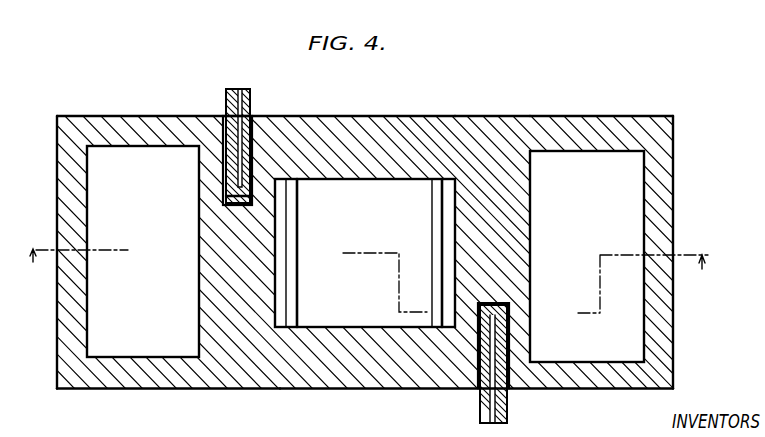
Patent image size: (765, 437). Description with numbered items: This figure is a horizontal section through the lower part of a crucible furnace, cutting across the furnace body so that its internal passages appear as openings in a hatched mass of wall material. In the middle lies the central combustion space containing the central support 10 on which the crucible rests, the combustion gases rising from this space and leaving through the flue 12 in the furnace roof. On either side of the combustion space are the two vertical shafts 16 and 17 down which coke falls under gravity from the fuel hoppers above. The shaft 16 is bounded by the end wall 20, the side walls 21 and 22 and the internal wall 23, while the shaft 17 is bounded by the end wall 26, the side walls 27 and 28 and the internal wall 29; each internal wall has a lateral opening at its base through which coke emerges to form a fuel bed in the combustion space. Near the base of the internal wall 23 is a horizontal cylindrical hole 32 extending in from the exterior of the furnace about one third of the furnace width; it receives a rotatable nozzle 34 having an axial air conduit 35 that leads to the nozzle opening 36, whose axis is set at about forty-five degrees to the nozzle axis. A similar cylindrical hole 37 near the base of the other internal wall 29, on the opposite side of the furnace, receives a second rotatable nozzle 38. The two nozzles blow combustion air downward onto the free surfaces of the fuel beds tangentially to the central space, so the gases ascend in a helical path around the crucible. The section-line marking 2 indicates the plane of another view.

The section line 2- 2 is at (72, 255).
The central support 10 is at (368, 202).
The flue 12 is at (648, 282).
The vertical shaft 16 is at (112, 232).
The vertical shaft 17 is at (598, 233).
The end wall 20 is at (72, 274).
The side wall 21 is at (112, 127).
The side wall 22 is at (134, 372).
The internal wall 23 is at (238, 300).
The end wall 26 is at (652, 281).
The side wall 27 is at (607, 128).
The side wall 28 is at (617, 372).
The internal wall 29 is at (483, 185).
The horizontal cylindrical hole 32 is at (225, 172).
The rotatable nozzle 34 is at (250, 100).
The axial air conduit 35 is at (240, 88).
The nozzle opening 36 is at (225, 205).
The cylindrical hole 37 is at (507, 323).
The rotatable nozzle 38 is at (505, 408).